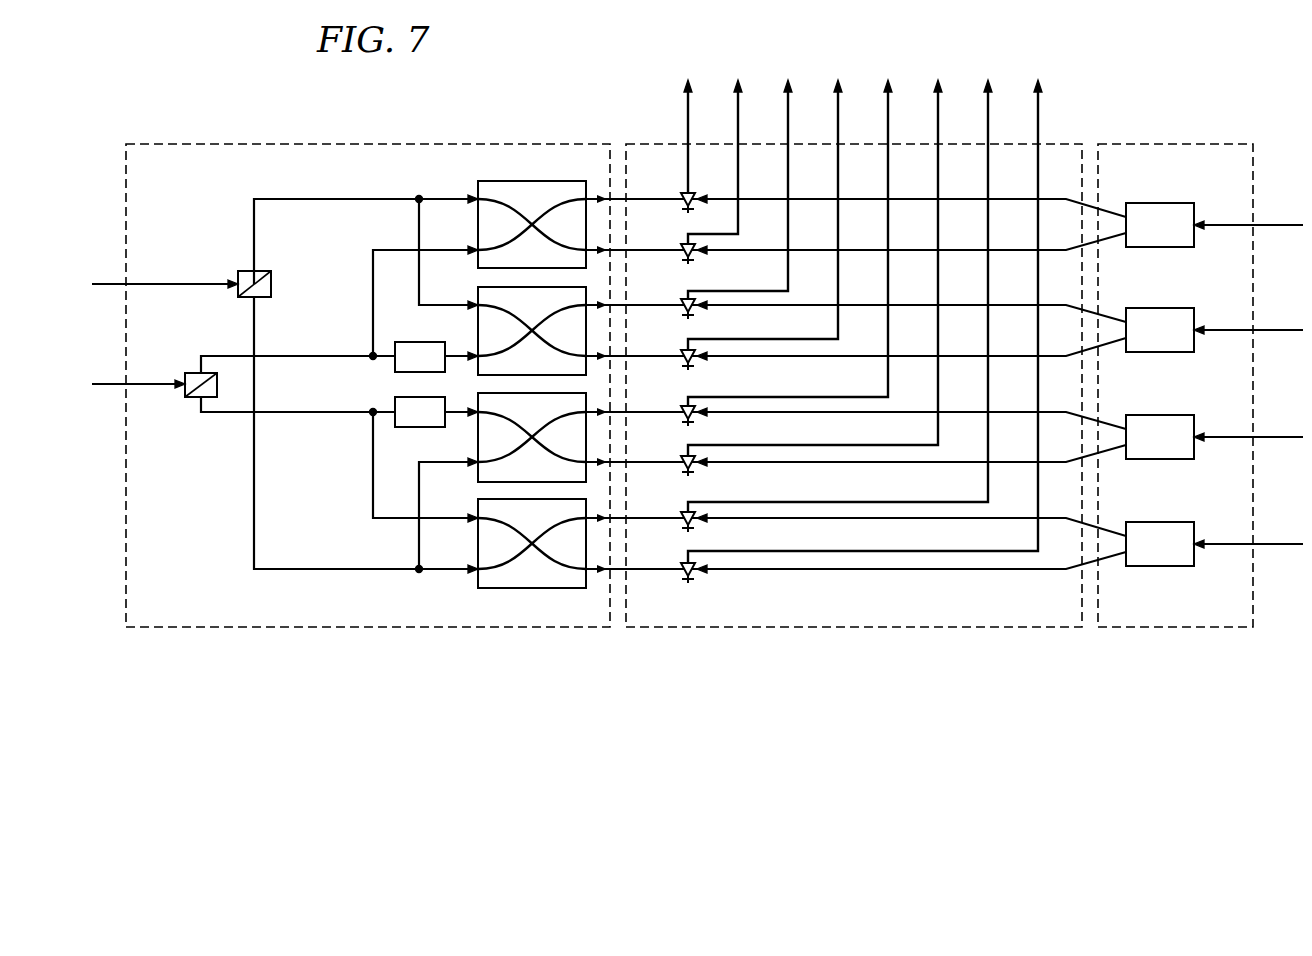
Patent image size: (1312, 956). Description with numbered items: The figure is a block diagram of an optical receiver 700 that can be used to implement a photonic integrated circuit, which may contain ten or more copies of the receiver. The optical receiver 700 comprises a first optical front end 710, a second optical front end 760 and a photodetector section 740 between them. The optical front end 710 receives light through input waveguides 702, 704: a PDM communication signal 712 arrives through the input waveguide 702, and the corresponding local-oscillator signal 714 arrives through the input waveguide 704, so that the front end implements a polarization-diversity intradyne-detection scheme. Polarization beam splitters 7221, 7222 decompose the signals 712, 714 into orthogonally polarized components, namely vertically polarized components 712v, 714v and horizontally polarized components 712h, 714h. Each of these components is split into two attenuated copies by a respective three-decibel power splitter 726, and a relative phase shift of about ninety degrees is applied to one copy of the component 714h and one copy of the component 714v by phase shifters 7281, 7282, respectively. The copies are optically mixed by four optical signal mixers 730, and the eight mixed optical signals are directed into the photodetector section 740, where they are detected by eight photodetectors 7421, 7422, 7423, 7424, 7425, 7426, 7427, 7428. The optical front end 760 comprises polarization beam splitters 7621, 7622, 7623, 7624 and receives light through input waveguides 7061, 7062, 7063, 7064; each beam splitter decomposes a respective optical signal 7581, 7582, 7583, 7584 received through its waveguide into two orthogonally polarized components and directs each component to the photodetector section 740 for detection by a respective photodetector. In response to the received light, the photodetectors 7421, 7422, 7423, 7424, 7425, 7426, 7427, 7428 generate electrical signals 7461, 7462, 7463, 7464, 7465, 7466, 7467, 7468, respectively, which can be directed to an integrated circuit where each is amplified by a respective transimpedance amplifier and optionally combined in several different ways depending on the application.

The optical receiver 700 is at (388, 85).
The input waveguide 702 is at (104, 282).
The input waveguide 704 is at (104, 388).
The optical front end 710 is at (538, 144).
The PDM communication signal 712 is at (152, 282).
The local-oscillator signal 714 is at (152, 388).
The horizontally polarized component 712h is at (256, 230).
The vertically polarized component 712v is at (256, 322).
The horizontally polarized component 714h is at (328, 358).
The vertically polarized component 714v is at (290, 416).
The polarization beam splitter 7221 is at (238, 292).
The polarization beam splitter 7222 is at (190, 373).
The 3-dB power splitter 726 is at (410, 206).
The phase shifter 7281 is at (410, 342).
The phase shifter 7282 is at (410, 427).
The optical signal mixer 730 is at (548, 522).
The photodetector section 740 is at (1060, 144).
The photodetector 7421 is at (683, 193).
The photodetector 7422 is at (683, 244).
The photodetector 7423 is at (683, 299).
The photodetector 7424 is at (683, 350).
The photodetector 7425 is at (683, 406).
The photodetector 7426 is at (683, 456).
The photodetector 7427 is at (683, 512).
The photodetector 7428 is at (683, 563).
The electrical signal 7461 is at (686, 131).
The electrical signal 7462 is at (736, 131).
The electrical signal 7463 is at (786, 131).
The electrical signal 7464 is at (836, 131).
The electrical signal 7465 is at (886, 131).
The electrical signal 7466 is at (936, 131).
The electrical signal 7467 is at (986, 131).
The electrical signal 7468 is at (1036, 131).
The optical front end 760 is at (1206, 144).
The polarization beam splitter 7621 is at (1178, 247).
The polarization beam splitter 7622 is at (1178, 352).
The polarization beam splitter 7623 is at (1178, 459).
The polarization beam splitter 7624 is at (1178, 566).
The optical signal 7581 is at (1219, 223).
The optical signal 7582 is at (1219, 328).
The optical signal 7583 is at (1219, 435).
The optical signal 7584 is at (1219, 542).
The input waveguide 7061 is at (1281, 223).
The input waveguide 7062 is at (1281, 328).
The input waveguide 7063 is at (1281, 435).
The input waveguide 7064 is at (1281, 542).